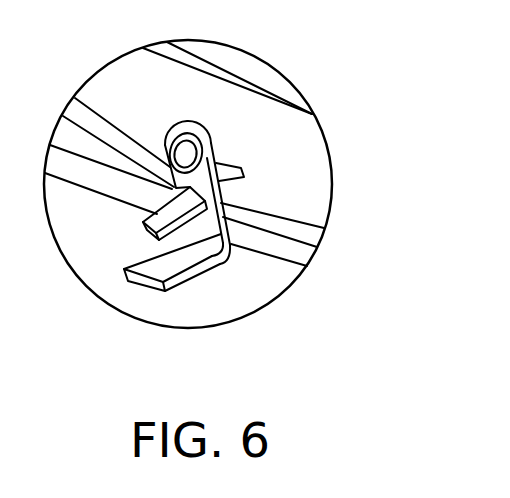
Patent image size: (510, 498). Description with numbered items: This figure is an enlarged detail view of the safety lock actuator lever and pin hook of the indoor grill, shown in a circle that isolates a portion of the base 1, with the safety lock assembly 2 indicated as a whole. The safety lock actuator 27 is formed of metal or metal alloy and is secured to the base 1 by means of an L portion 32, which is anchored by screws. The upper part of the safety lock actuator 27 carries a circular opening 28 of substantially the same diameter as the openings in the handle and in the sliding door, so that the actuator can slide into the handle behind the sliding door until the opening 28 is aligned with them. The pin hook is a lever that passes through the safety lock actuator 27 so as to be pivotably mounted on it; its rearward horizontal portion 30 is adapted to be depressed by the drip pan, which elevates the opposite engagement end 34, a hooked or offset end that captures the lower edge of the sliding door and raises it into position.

The base 1 is at (318, 199).
The safety lock assembly 2 is at (340, 260).
The safety lock actuator 27 is at (203, 180).
The circular opening 28 is at (170, 132).
The rearward horizontal portion 30 is at (156, 242).
The L portion 32 is at (170, 268).
The engagement end 34 is at (247, 172).